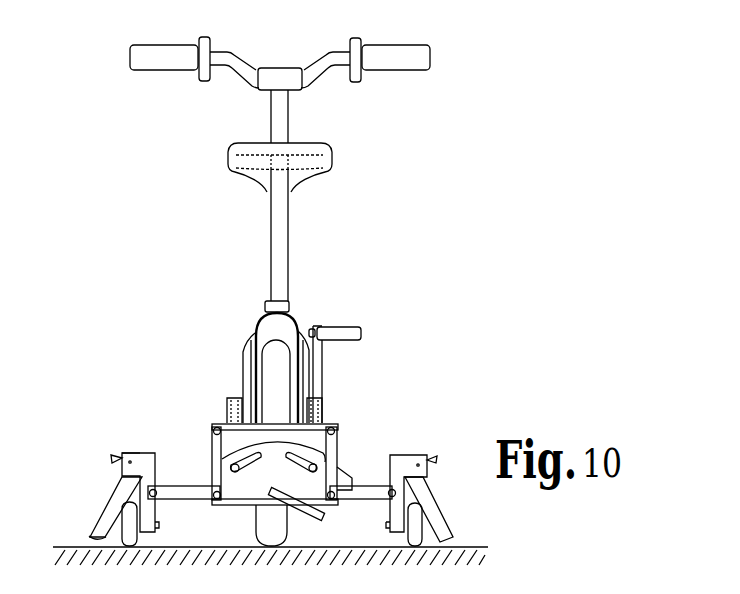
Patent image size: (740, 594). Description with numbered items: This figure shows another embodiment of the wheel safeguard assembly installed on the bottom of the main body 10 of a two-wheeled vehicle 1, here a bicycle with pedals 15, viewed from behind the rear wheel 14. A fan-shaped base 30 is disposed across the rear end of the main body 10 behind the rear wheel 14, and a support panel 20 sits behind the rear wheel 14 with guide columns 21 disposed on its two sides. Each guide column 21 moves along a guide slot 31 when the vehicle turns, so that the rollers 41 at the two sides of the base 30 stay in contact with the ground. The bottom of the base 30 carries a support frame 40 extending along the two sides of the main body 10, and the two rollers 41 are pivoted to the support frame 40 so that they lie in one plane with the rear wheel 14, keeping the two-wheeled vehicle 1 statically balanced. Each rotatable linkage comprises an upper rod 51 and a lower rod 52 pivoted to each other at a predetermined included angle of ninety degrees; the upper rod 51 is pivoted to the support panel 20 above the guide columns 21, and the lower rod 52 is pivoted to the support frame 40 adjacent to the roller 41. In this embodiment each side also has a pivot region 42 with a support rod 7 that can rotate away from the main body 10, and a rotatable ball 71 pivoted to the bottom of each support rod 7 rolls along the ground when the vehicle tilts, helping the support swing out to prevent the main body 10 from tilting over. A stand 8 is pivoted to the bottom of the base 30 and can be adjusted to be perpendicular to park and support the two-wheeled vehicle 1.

The two-wheeled vehicle 1 is at (210, 213).
The main body 10 is at (277, 260).
The rear wheel 14 is at (272, 372).
The pedals 15 is at (342, 327).
The support panel 20 is at (265, 415).
The guide column 21 is at (214, 465).
The base 30 is at (248, 490).
The guide slot 31 is at (213, 430).
The upper rod 51 is at (337, 447).
The stand 8 is at (305, 513).
The support frame 40 is at (177, 483).
The pivot region 42 is at (130, 453).
The support rod 7 is at (110, 495).
The rotatable ball 71 is at (88, 547).
The lower rod 52 is at (370, 485).
The roller 41 is at (423, 508).